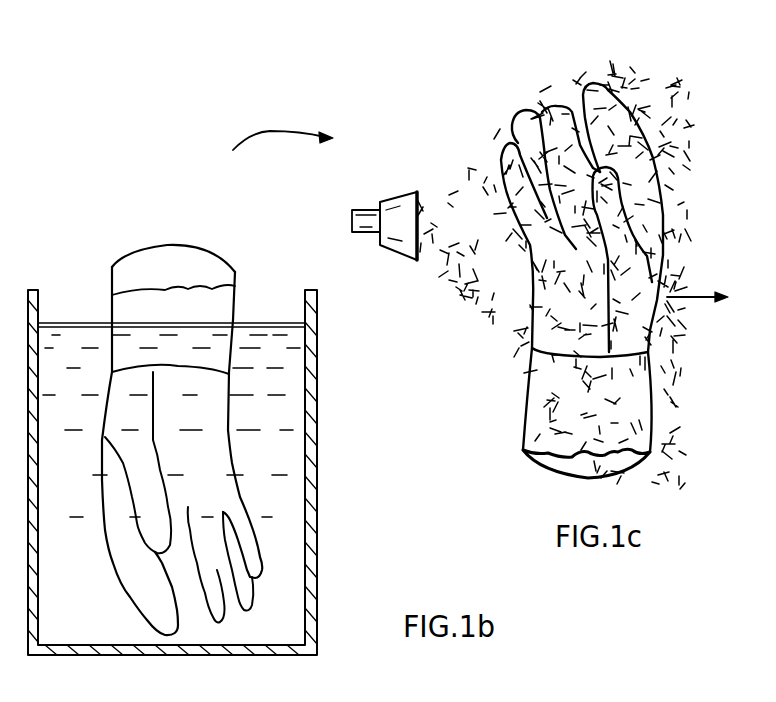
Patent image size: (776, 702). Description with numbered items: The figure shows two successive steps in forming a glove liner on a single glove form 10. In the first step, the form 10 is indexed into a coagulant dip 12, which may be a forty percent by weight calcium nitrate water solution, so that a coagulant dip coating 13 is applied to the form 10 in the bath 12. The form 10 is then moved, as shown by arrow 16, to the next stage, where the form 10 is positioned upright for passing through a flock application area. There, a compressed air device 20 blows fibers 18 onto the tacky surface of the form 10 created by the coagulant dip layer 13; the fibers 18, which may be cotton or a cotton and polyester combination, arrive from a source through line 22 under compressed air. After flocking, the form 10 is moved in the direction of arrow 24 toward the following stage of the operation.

In FIG. 1B, the form 10 is at (130, 270).
In FIG. 1C, the form 10 is at (610, 473).
In FIG. 1B, the coagulant dip 12 is at (290, 528).
In FIG. 1B, the coagulant dip coating 13 is at (217, 307).
In FIG. 1C, the arrow 16 is at (280, 131).
In FIG. 1C, the fibers 18 is at (490, 130).
In FIG. 1C, the compressed air device 20 is at (395, 220).
In FIG. 1C, the line 22 is at (358, 232).
In FIG. 1C, the arrow 24 is at (700, 298).